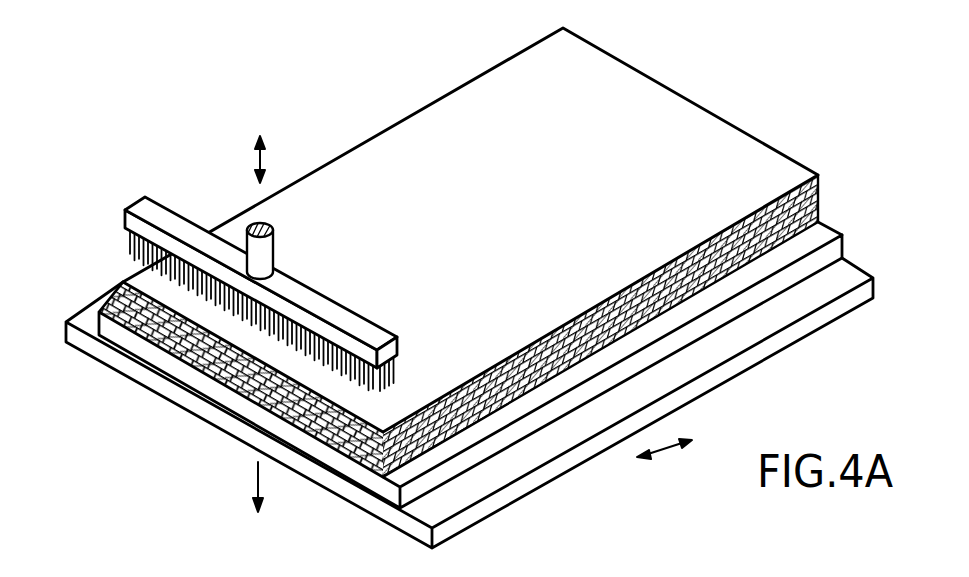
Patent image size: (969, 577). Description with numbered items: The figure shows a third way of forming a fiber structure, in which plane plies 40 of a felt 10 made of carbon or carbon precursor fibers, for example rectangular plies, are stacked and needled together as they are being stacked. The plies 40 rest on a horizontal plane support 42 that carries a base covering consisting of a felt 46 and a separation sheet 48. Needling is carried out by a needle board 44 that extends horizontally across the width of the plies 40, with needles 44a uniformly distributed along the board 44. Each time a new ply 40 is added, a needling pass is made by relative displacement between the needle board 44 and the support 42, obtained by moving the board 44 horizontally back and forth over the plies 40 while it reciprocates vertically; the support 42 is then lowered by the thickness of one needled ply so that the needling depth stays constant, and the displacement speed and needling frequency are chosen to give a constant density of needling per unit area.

The felt 10 is at (232, 390).
The plane plies 40 is at (608, 97).
The horizontal plane support 42 is at (465, 520).
The needle board 44 is at (297, 280).
The needles 44a is at (127, 248).
The felt 46 is at (512, 438).
The separation sheet 48 is at (820, 232).